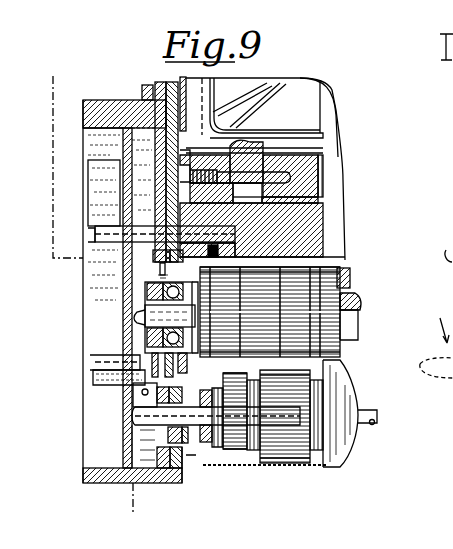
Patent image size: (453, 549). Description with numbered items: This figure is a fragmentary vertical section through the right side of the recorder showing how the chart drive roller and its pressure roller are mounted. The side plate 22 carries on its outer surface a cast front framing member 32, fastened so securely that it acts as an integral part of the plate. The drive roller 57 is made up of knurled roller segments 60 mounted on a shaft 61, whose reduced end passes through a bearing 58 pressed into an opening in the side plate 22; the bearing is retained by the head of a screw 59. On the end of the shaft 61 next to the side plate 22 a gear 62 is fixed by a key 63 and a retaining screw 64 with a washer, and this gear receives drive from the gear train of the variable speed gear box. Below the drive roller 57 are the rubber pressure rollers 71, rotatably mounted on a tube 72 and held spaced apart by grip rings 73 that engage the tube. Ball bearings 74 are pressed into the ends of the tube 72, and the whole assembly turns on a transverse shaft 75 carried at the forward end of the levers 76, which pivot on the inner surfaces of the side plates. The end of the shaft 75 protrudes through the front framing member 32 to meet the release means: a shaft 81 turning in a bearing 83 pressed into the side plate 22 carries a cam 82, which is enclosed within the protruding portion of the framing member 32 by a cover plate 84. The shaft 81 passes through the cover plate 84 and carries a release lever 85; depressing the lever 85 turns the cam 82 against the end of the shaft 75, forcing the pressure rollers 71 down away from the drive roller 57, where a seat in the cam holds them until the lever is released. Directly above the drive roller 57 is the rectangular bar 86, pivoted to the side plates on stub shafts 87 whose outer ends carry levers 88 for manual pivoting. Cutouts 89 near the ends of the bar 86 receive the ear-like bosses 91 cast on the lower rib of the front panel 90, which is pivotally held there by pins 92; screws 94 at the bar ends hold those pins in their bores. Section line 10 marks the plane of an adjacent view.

The section line 10 is at (53, 76).
The side plate 22 is at (181, 467).
The front framing member 32 is at (83, 118).
The drive roller 57 is at (352, 275).
The bearing 58 is at (157, 281).
The screw 59 is at (158, 270).
The roller segments 60 is at (313, 265).
The shaft 61 is at (360, 302).
The gear 62 is at (143, 293).
The key 63 is at (137, 313).
The retaining screw 64 is at (140, 328).
The pressure rollers 71 is at (287, 460).
The tube 72 is at (360, 390).
The grip rings 73 is at (258, 450).
The ball bearings 74 is at (200, 440).
The transverse shaft 75 is at (374, 420).
The levers 76 is at (190, 443).
The shaft 81 is at (128, 386).
The cam 82 is at (133, 408).
The bearing 83 is at (118, 365).
The cover plate 84 is at (123, 450).
The release lever 85 is at (160, 365).
The rectangular bar 86 is at (320, 163).
The stub shafts 87 is at (118, 227).
The levers 88 is at (92, 175).
The cutouts 89 is at (252, 208).
The front panel 90 is at (322, 116).
The bosses 91 is at (263, 192).
The pins 92 is at (270, 177).
The screws 94 is at (210, 177).